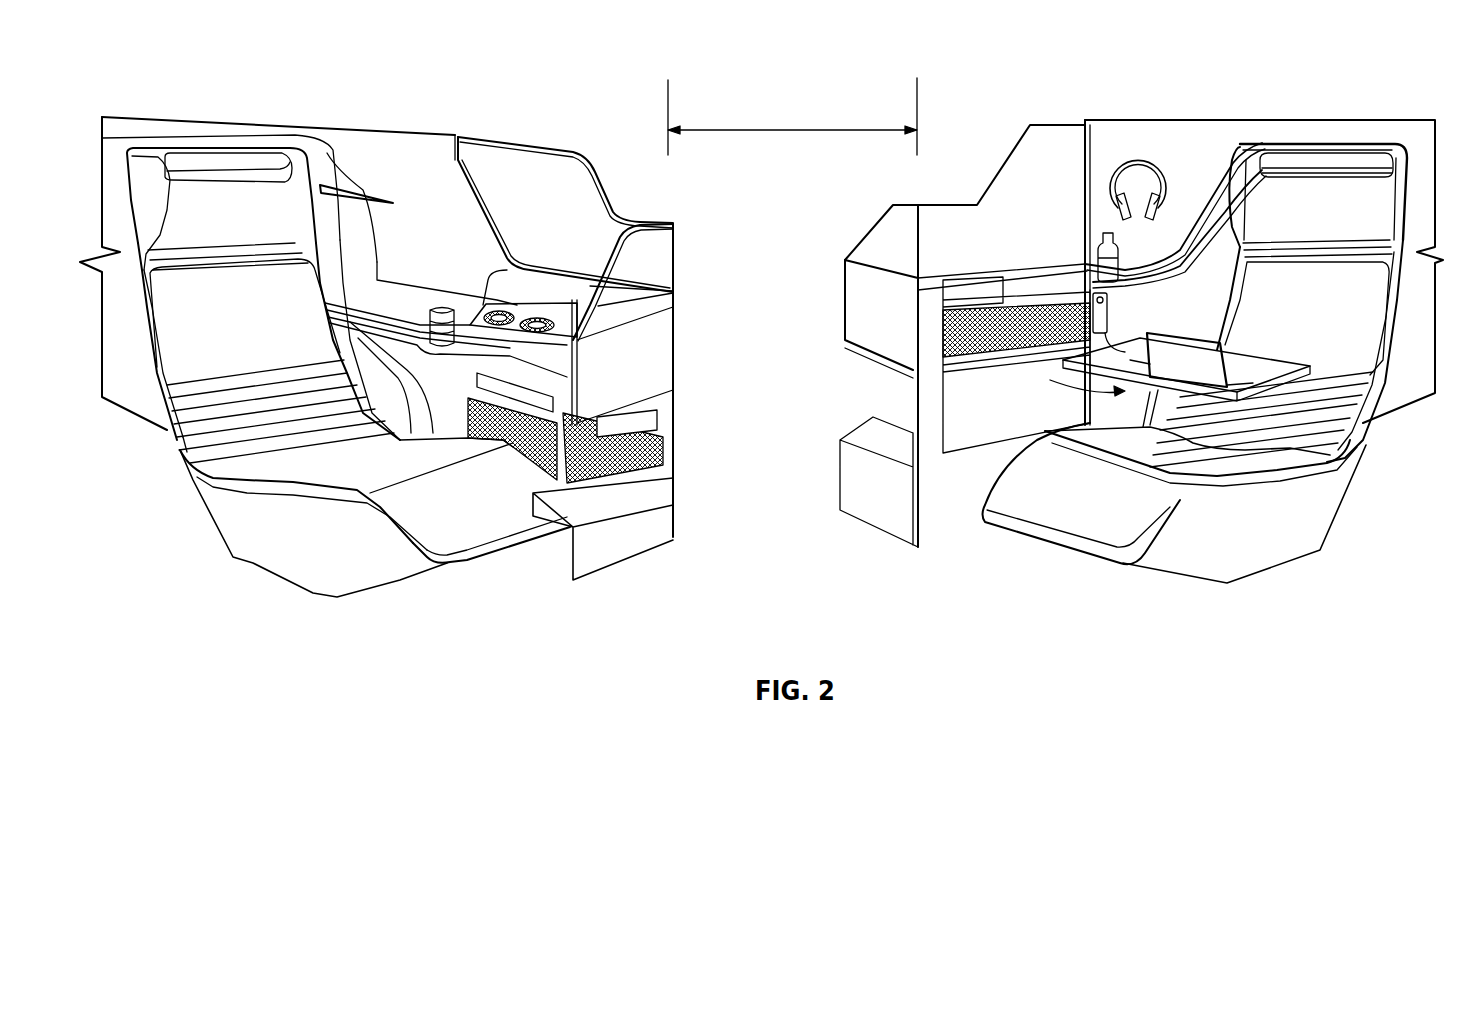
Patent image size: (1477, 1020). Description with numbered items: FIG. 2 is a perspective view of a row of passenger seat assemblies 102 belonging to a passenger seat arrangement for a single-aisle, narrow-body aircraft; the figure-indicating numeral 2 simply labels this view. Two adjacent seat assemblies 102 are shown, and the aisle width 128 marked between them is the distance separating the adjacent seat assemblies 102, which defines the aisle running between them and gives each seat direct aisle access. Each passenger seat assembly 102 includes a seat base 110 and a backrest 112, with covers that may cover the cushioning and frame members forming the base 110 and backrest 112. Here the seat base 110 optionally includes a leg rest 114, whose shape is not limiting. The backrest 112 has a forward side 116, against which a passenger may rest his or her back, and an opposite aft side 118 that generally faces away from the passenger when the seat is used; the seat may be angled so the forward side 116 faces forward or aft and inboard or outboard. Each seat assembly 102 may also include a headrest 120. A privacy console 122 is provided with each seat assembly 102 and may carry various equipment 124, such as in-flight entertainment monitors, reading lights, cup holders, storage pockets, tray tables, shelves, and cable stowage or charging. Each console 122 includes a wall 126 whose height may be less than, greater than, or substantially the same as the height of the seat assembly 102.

The passenger seat assembly 102 is at (197, 173).
The seat base 110 is at (283, 477).
The backrest 112 is at (177, 357).
The leg rest 114 is at (487, 557).
The forward side 116 is at (207, 410).
The aft side 118 is at (207, 510).
The headrest 120 is at (257, 187).
The privacy console 122 is at (413, 148).
The equipment 124 is at (357, 307).
The wall 126 is at (297, 127).
The aisle width 128 is at (762, 130).
The section indicator 2 is at (325, 151).